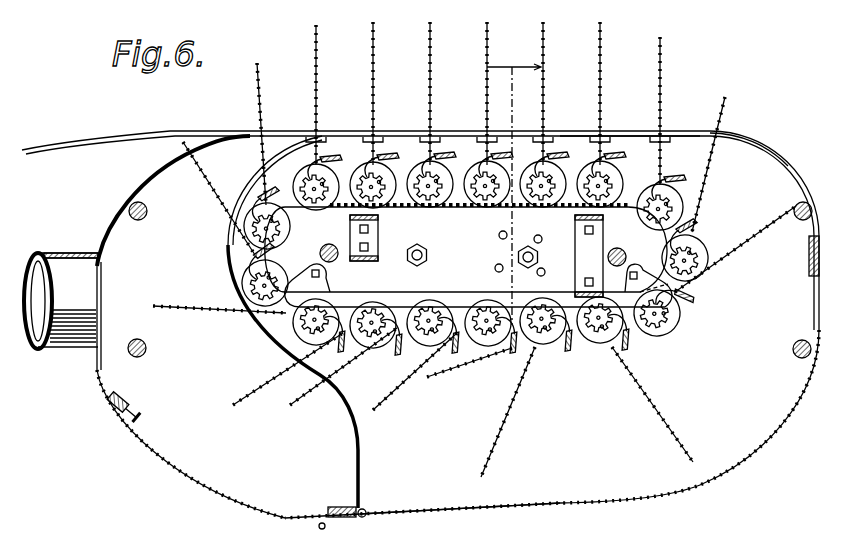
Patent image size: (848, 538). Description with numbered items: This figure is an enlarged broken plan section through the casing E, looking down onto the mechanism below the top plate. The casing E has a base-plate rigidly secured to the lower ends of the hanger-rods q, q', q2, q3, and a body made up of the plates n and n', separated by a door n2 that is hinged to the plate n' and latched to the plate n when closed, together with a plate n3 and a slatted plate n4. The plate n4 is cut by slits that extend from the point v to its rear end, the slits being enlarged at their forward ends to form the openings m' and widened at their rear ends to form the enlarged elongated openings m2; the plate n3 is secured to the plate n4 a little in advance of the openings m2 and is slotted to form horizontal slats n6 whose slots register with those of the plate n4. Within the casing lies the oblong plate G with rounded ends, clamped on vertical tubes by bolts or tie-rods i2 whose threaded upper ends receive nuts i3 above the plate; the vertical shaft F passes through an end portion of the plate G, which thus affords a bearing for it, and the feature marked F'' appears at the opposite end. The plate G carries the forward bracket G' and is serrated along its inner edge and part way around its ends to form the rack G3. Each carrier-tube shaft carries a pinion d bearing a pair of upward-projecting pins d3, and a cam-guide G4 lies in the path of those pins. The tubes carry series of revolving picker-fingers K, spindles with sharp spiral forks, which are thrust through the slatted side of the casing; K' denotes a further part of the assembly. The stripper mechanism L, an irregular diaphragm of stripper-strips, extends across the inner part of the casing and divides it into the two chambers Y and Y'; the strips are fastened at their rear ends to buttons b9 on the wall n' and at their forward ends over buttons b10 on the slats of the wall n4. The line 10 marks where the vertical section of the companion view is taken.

The casing E is at (552, 324).
The enlarged elongated openings m2 is at (172, 131).
The openings m' is at (764, 149).
The plate n is at (109, 316).
The plate n' is at (481, 489).
The door n2 is at (206, 490).
The plate n3 is at (134, 195).
The plate n4 is at (631, 133).
The horizontal slats n6 is at (216, 145).
The stripper mechanism L is at (364, 448).
The chamber Y is at (281, 466).
The chamber Y' is at (450, 466).
The picker-fingers K is at (454, 138).
The spout K' is at (61, 325).
The section line 10 is at (514, 181).
The hanger-rod q is at (148, 218).
The hanger-rod q2 is at (146, 354).
The hanger-rod q' is at (789, 234).
The hanger-rod q3 is at (792, 350).
The point v is at (787, 138).
The buttons b9 is at (363, 508).
The buttons b10 is at (345, 137).
The pinion d is at (495, 229).
The pins d3 is at (606, 188).
The plate G is at (466, 248).
The forward bracket G' is at (589, 256).
The rack G3 is at (392, 204).
The cam-guide G4 is at (573, 310).
The bolt or tie-rod i2 is at (408, 260).
The nut i3 is at (496, 252).
The vertical shaft F is at (319, 246).
The pivot stud F'' is at (626, 246).